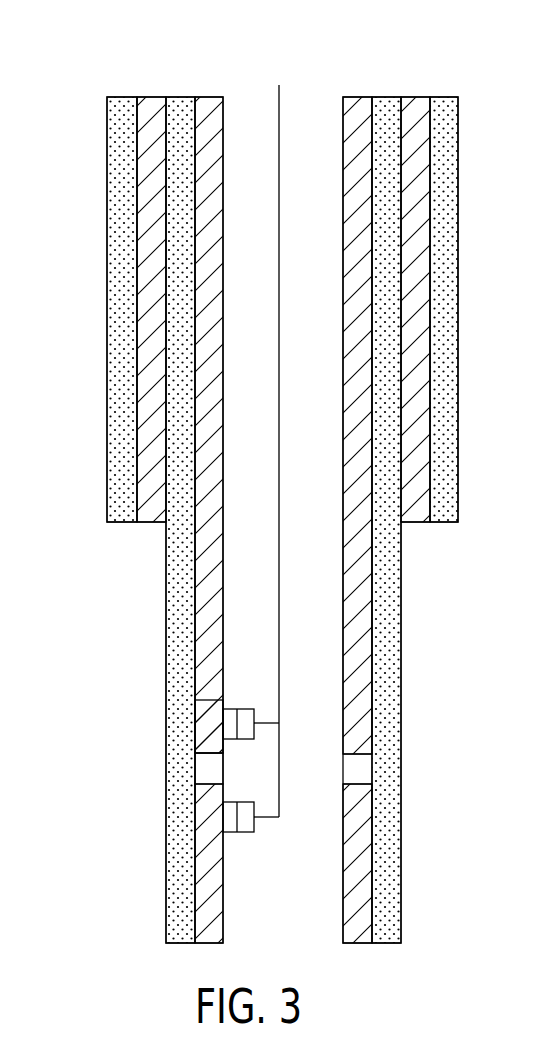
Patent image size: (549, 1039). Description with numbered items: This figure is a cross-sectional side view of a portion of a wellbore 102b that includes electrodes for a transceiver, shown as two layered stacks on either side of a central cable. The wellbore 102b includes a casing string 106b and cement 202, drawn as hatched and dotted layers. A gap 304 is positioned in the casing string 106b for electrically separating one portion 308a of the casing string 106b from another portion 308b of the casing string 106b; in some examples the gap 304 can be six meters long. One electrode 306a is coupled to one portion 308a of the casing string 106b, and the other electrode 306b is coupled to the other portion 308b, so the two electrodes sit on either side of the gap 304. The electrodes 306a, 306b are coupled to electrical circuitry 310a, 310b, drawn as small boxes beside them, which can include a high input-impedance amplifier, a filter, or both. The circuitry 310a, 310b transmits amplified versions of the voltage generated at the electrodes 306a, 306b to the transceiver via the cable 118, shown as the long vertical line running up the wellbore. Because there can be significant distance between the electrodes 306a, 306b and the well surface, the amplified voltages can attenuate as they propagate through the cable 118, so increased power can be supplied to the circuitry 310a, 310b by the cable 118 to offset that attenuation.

The wellbore 102b is at (385, 484).
The casing string 106b is at (210, 455).
The cable 118 is at (280, 92).
The cement 202 is at (107, 503).
The gap 304 is at (210, 770).
The electrode 306a is at (225, 719).
The electrode 306b is at (228, 815).
The portion of the casing string 308a is at (358, 678).
The portion of the casing string 308b is at (355, 858).
The electrical circuitry 310a is at (243, 720).
The electrical circuitry 310b is at (243, 820).